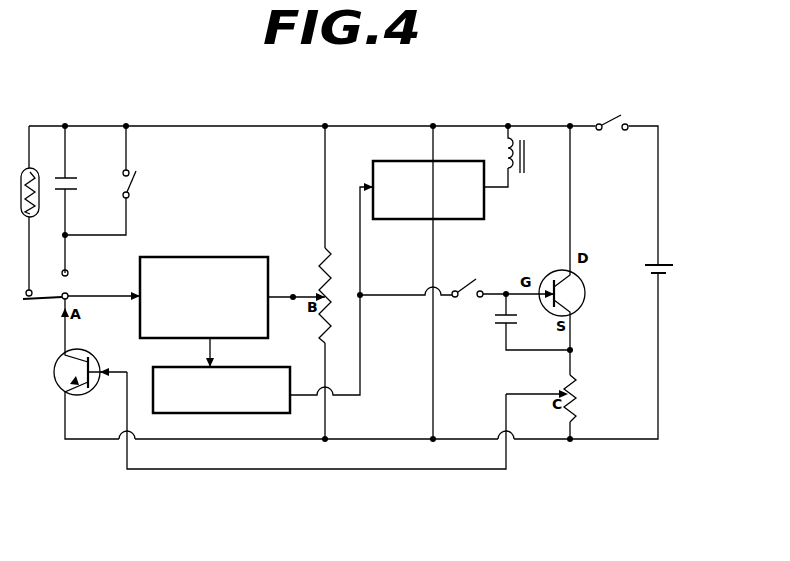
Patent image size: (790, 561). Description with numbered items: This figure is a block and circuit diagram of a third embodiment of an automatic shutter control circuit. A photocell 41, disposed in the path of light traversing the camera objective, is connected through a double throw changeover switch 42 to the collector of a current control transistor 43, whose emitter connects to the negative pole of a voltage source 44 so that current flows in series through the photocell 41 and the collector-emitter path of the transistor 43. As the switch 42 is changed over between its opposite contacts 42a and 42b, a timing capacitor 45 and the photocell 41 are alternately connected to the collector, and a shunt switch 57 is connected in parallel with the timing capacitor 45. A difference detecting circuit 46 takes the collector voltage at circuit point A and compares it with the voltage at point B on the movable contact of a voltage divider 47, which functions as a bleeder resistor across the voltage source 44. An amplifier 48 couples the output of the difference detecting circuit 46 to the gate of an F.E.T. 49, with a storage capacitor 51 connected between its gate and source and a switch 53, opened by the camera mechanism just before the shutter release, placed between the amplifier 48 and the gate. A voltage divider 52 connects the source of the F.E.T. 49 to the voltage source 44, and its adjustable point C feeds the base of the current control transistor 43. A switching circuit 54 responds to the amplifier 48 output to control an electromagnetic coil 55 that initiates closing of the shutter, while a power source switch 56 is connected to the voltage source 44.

The photocell 41 is at (40, 183).
The timing capacitor 45 is at (78, 178).
The shunt switch 57 is at (106, 180).
The double throw changeover switch 42 is at (36, 305).
The switch contact 42a is at (40, 284).
The switch contact 42b is at (77, 266).
The current control transistor 43 is at (78, 395).
The difference detecting circuit 46 is at (204, 312).
The voltage divider 47 is at (284, 282).
The amplifier 48 is at (263, 298).
The F.E.T. 49 is at (578, 298).
The storage capacitor 51 is at (497, 320).
The voltage divider 52 is at (551, 394).
The switch 53 is at (475, 285).
The switching circuit 54 is at (440, 282).
The electromagnetic coil 55 is at (526, 149).
The power source switch 56 is at (612, 116).
The voltage source 44 is at (649, 271).